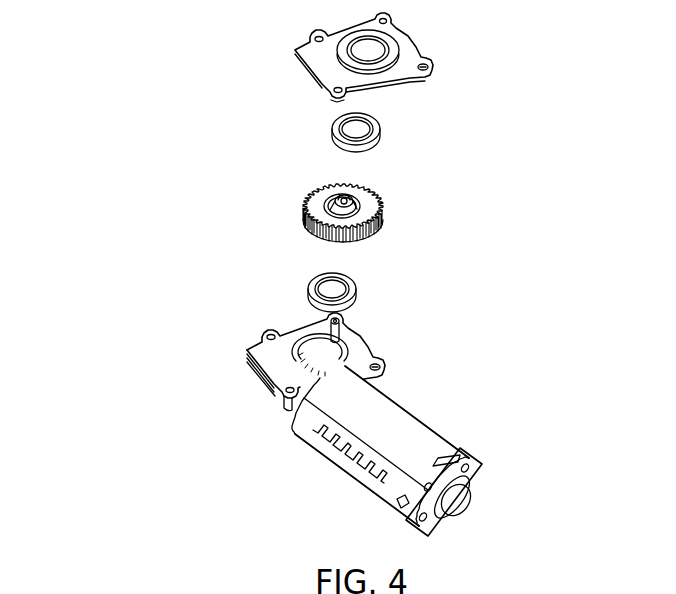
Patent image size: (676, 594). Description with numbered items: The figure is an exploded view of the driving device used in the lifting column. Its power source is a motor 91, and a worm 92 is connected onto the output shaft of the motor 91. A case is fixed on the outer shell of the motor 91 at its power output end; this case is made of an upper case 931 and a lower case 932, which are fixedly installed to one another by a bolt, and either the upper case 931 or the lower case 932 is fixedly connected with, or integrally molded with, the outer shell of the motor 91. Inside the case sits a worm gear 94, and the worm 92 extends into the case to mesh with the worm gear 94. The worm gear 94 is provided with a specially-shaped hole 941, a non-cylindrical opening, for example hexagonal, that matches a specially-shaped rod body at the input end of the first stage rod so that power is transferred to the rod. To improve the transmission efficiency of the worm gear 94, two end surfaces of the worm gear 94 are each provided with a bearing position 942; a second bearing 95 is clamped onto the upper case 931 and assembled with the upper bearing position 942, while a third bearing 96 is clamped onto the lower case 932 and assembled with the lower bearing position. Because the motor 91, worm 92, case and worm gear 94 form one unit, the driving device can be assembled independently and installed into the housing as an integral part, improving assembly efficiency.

The motor 91 is at (410, 407).
The worm 92 is at (211, 329).
The upper case 931 is at (297, 53).
The lower case 932 is at (248, 355).
The worm gear 94 is at (367, 181).
The specially-shaped hole 941 is at (303, 200).
The bearing position 942 is at (352, 192).
The second bearing 95 is at (382, 127).
The third bearing 96 is at (357, 293).